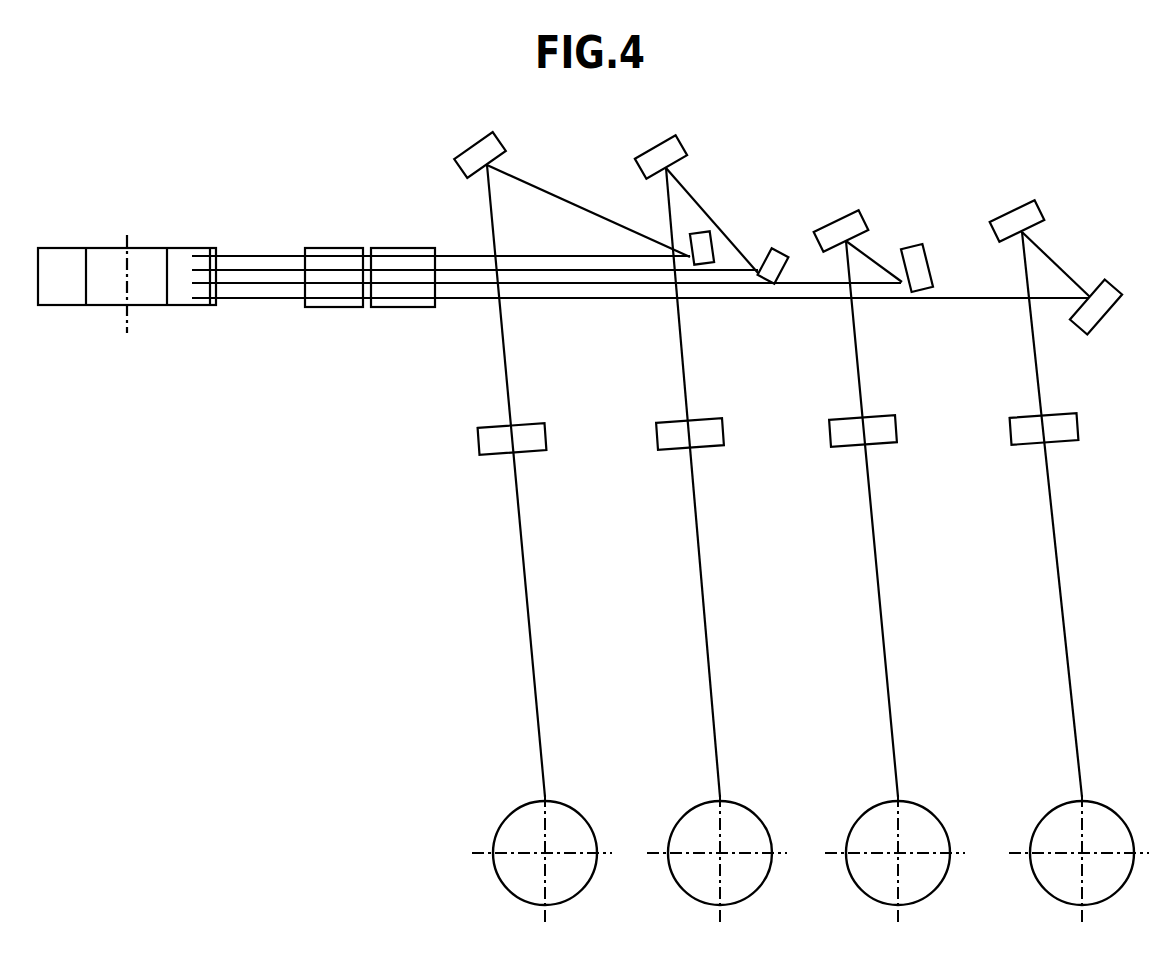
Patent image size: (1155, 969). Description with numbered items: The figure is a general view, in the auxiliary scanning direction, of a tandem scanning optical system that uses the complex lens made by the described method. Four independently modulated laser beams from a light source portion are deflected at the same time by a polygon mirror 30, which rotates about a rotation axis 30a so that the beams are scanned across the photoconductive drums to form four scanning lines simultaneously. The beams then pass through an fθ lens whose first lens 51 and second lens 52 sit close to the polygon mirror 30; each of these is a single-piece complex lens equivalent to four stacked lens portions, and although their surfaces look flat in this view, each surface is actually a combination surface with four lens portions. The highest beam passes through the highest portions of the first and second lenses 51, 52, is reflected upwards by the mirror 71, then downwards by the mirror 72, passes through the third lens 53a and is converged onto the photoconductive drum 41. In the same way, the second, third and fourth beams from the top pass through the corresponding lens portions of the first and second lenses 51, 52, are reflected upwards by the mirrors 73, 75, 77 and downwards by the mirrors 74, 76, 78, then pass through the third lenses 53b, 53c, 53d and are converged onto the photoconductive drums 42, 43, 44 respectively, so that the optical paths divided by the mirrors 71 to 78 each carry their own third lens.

The polygon mirror 30 is at (62, 296).
The rotation axis 30a is at (130, 318).
The first lens 51 is at (330, 300).
The second lens 52 is at (398, 300).
The mirror 71 is at (703, 238).
The mirror 72 is at (493, 137).
The mirror 73 is at (776, 252).
The mirror 74 is at (678, 146).
The mirror 75 is at (923, 250).
The mirror 76 is at (843, 220).
The mirror 77 is at (1098, 295).
The mirror 78 is at (1005, 221).
The third lens 53a is at (480, 448).
The third lens 53b is at (660, 440).
The third lens 53c is at (835, 435).
The third lens 53d is at (1012, 432).
The photoconductive drum 41 is at (512, 822).
The photoconductive drum 42 is at (692, 822).
The photoconductive drum 43 is at (868, 822).
The photoconductive drum 44 is at (1052, 822).